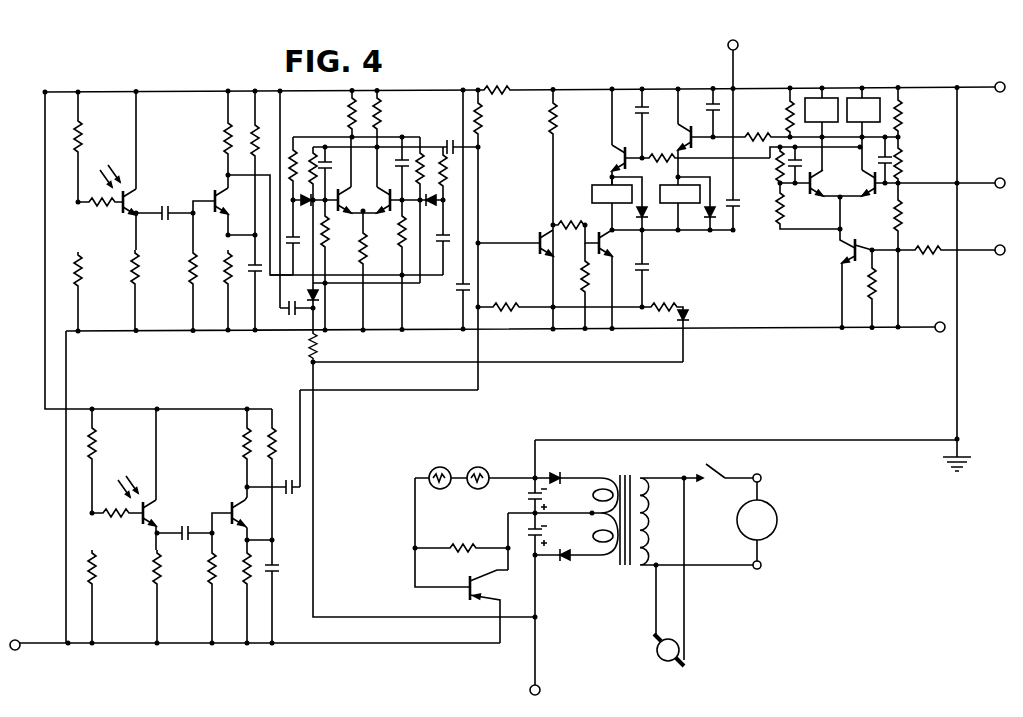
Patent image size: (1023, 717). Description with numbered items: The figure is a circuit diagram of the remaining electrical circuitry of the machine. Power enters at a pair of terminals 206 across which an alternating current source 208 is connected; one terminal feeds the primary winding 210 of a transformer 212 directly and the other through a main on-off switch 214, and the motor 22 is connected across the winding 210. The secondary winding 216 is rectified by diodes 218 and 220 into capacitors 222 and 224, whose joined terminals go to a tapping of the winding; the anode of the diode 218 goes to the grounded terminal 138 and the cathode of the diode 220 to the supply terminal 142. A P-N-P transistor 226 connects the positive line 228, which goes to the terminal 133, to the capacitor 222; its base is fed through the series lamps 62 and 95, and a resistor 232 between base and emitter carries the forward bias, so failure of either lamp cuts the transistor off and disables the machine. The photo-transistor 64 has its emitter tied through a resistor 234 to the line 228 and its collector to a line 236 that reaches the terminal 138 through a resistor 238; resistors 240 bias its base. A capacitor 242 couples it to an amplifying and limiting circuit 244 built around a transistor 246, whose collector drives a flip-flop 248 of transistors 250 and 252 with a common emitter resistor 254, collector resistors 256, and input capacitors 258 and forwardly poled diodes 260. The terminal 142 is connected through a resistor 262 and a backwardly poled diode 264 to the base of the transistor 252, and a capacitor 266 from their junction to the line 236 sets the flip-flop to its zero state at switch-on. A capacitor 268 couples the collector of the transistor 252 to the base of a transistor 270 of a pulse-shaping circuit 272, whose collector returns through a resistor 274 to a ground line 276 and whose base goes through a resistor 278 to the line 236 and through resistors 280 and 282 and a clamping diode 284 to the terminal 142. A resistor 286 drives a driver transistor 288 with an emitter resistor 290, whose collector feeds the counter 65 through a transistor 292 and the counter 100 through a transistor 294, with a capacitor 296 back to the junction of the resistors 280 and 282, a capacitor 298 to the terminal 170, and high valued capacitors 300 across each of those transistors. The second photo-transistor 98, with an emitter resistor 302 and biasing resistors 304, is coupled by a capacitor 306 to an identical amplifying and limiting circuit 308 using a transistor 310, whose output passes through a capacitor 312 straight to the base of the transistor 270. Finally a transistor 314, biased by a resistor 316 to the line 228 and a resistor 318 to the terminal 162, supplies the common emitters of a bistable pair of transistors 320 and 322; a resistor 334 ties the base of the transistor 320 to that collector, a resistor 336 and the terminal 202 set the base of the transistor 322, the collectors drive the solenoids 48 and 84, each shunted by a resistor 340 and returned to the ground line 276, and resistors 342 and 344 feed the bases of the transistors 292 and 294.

The motor 22 is at (656, 651).
The solenoid 48 is at (821, 129).
The lamp 62 is at (478, 467).
The photo-transistor 64 is at (118, 171).
The electromagnetic counter 65 is at (612, 203).
The solenoid 84 is at (863, 129).
The lamp 95 is at (440, 467).
The photo-transistor 98 is at (157, 495).
The electromagnetic counter 100 is at (680, 203).
The terminal 133 is at (20, 642).
The terminal 138 is at (994, 82).
The supply terminal 142 is at (530, 689).
The terminal 162 is at (999, 245).
The terminal 170 is at (739, 47).
The terminal 202 is at (999, 178).
The terminals 206 is at (760, 476).
The alternating current source 208 is at (757, 521).
The primary winding 210 is at (654, 516).
The transformer 212 is at (628, 511).
The main on-off switch 214 is at (716, 468).
The secondary winding 216 is at (595, 496).
The diode 218 is at (551, 475).
The diode 220 is at (571, 563).
The capacitor 222 is at (526, 495).
The capacitor 224 is at (528, 538).
The P-N-P transistor 226 is at (468, 581).
The positive line 228 is at (412, 328).
The resistor 232 is at (470, 543).
The resistor 234 is at (140, 282).
The line 236 is at (213, 90).
The resistor 238 is at (512, 88).
The resistors 240 is at (84, 126).
The capacitor 242 is at (170, 219).
The amplifying and limiting circuit 244 is at (240, 210).
The P-N-P transistor 246 is at (212, 196).
The flip-flop 248 is at (358, 199).
The P-N-P transistor 250 is at (336, 192).
The P-N-P transistor 252 is at (389, 191).
The resistor 254 is at (366, 250).
The resistors 256 is at (351, 127).
The capacitors 258 is at (368, 237).
The diodes 260 is at (370, 262).
The resistor 262 is at (308, 347).
The diode 264 is at (311, 293).
The capacitor 266 is at (289, 313).
The capacitor 268 is at (450, 140).
The P-N-P transistor 270 is at (535, 243).
The pulse-shaping circuit 272 is at (512, 209).
The resistor 274 is at (558, 119).
The ground line 276 is at (625, 89).
The resistor 278 is at (483, 119).
The resistor 280 is at (500, 298).
The resistor 282 is at (667, 304).
The clamping diode 284 is at (689, 312).
The resistor 286 is at (558, 219).
The P-N-P transistor 288 is at (610, 243).
The resistor 290 is at (585, 278).
The P-N-P transistor 292 is at (614, 159).
The P-N-P transistor 294 is at (699, 142).
The capacitor 296 is at (650, 272).
The capacitor 298 is at (740, 202).
The capacitors 300 is at (647, 114).
The resistor 302 is at (154, 563).
The resistors 304 is at (100, 437).
The capacitor 306 is at (182, 549).
The amplifying and limiting circuit 308 is at (233, 526).
The P-N-P transistor 310 is at (233, 501).
The capacitor 312 is at (282, 484).
The P-N-P transistor 314 is at (846, 248).
The resistor 316 is at (872, 286).
The resistor 318 is at (934, 247).
The P-N-P transistor 320 is at (815, 198).
The P-N-P transistor 322 is at (881, 204).
The resistor 334 is at (794, 220).
The resistor 336 is at (908, 202).
The resistors 340 is at (787, 112).
The resistor 342 is at (650, 157).
The resistor 344 is at (760, 129).